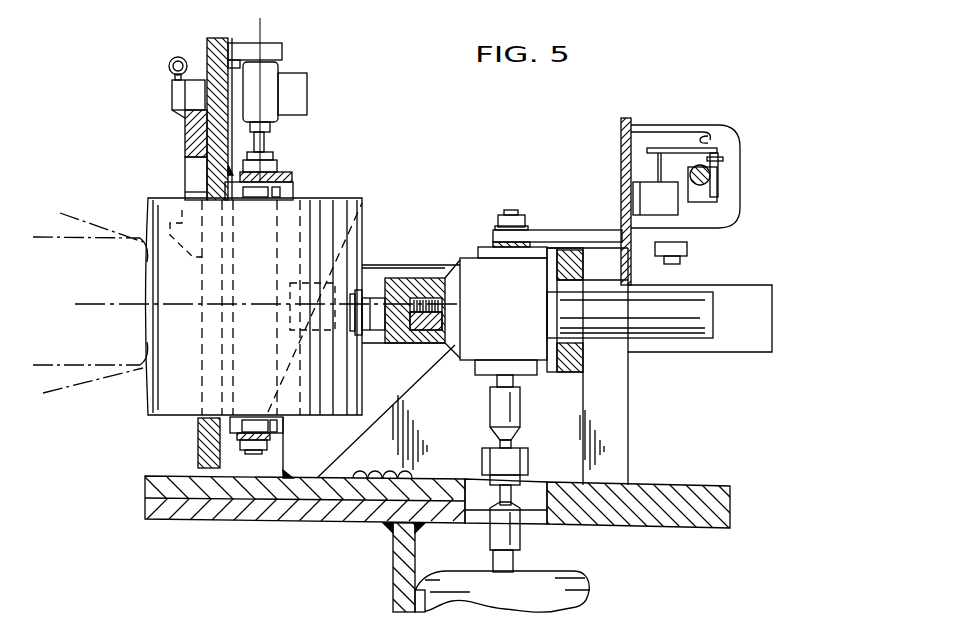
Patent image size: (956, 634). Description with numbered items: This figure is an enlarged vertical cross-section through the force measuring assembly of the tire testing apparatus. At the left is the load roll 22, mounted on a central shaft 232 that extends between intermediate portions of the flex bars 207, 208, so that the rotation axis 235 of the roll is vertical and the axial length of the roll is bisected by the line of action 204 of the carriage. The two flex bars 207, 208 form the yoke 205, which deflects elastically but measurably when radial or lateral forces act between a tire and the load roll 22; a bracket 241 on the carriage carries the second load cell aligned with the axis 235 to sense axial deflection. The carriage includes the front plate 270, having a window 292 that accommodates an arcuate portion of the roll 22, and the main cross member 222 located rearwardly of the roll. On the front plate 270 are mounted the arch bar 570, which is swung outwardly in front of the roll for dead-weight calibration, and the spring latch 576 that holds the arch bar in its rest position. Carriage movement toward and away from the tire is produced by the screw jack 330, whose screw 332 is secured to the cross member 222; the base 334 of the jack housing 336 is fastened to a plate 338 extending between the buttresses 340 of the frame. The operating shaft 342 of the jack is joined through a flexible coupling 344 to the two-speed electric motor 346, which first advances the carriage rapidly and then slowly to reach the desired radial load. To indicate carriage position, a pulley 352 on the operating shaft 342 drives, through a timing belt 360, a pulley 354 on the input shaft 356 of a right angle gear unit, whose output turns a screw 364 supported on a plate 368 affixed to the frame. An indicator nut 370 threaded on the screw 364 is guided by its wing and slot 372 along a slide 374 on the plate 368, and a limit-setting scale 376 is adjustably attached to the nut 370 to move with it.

The load roll 22 is at (362, 217).
The direction line of action 204 is at (113, 303).
The yoke 205 is at (290, 161).
The flex bar 207 is at (287, 178).
The flex bar 208 is at (286, 442).
The main cross member 222 is at (400, 283).
The central shaft 232 is at (280, 193).
The rotation axis 235 is at (262, 33).
The bracket 241 is at (243, 42).
The front plate 270 is at (207, 47).
The window 292 is at (187, 192).
The screw jack 330 is at (470, 348).
The screw 332 is at (418, 345).
The base 334 is at (550, 352).
The jack housing 336 is at (521, 311).
The plate 338 is at (583, 367).
The buttresses 340 is at (455, 450).
The operating shaft 342 is at (518, 380).
The flexible coupling 344 is at (482, 458).
The two-speed electric motor 346 is at (516, 602).
The pulley 352 is at (530, 222).
The pulley 354 is at (688, 250).
The input shaft 356 is at (670, 262).
The timing belt 360 is at (573, 230).
The screw 364 is at (712, 183).
The plate 368 is at (627, 120).
The indicator nut 370 is at (700, 200).
The wing and slot 372 is at (712, 138).
The slide 374 is at (673, 130).
The scale 376 is at (722, 168).
The arch bar 570 is at (188, 163).
The spring latch 576 is at (172, 95).